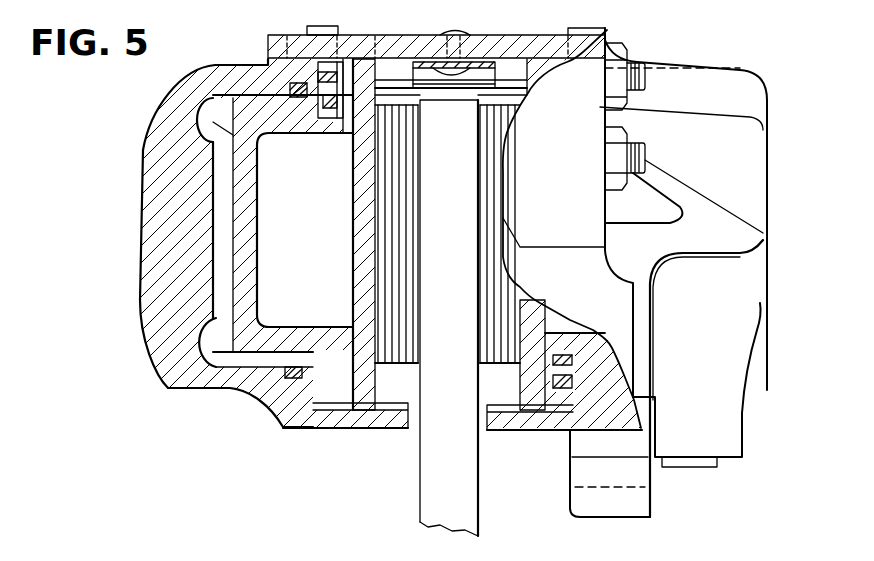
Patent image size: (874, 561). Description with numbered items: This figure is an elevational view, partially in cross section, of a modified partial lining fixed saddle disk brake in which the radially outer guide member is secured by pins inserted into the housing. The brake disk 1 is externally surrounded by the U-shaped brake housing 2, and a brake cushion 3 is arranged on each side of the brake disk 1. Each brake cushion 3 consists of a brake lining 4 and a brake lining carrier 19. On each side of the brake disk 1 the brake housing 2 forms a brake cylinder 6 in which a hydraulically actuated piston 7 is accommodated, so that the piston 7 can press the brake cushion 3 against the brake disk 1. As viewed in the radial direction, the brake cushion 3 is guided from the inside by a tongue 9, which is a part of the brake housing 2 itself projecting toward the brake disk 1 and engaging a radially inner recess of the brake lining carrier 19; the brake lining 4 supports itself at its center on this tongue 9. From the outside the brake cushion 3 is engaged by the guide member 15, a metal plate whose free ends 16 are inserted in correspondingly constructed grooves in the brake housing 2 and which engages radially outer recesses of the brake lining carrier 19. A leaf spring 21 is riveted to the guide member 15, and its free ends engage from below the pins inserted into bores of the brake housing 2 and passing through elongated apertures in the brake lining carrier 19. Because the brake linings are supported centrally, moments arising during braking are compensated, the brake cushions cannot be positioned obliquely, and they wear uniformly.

The brake disk 1 is at (437, 467).
The brake housing 2 is at (167, 358).
The brake cushion 3 is at (376, 368).
The brake lining 4 is at (400, 330).
The brake cylinder 6 is at (227, 198).
The piston 7 is at (248, 282).
The tongue 9 is at (390, 422).
The guide member 15 is at (478, 47).
The free ends 16 is at (302, 47).
The brake lining carrier 19 is at (360, 223).
The leaf spring 21 is at (427, 63).